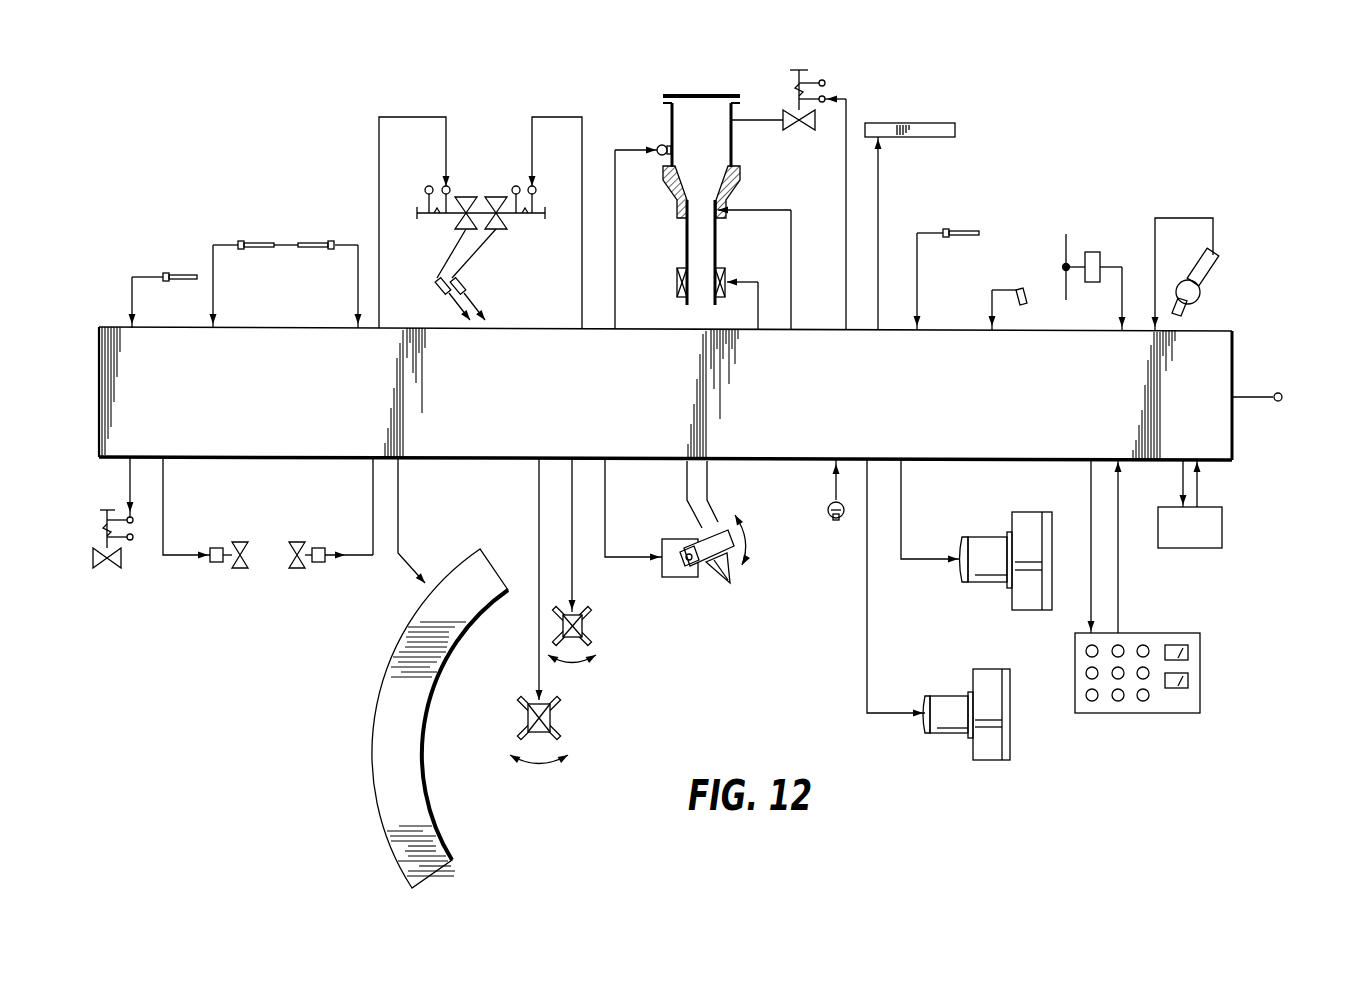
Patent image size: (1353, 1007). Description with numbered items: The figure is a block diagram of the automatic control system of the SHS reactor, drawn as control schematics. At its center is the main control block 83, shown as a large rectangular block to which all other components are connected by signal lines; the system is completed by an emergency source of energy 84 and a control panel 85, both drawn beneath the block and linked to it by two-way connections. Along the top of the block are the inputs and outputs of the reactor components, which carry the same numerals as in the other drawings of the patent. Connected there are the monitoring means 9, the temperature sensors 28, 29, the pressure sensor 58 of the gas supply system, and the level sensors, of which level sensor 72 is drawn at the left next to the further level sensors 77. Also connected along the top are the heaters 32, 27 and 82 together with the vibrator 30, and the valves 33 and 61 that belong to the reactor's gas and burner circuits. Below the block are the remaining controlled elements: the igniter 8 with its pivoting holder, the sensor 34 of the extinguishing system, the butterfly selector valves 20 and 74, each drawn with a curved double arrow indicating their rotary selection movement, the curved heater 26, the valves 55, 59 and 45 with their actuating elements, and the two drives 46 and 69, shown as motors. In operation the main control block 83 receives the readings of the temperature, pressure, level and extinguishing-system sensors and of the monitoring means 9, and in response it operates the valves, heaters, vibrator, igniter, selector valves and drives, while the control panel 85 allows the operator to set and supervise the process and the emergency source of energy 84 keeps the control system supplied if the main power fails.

The igniter 8 is at (710, 567).
The monitoring means 9 is at (1208, 278).
The butterfly selector valve 20 is at (560, 719).
The heater 26 is at (398, 715).
The heater 27 is at (675, 275).
The temperature sensor 28 is at (1026, 290).
The temperature sensor 29 is at (960, 230).
The vibrator 30 is at (660, 146).
The heater 32 is at (733, 193).
The valve 33 is at (799, 131).
The sensor of the extinguishing system 34 is at (829, 510).
The valve 45 is at (297, 570).
The drive 46 is at (1025, 521).
The valve 55 is at (105, 568).
The pressure sensor 58 is at (1100, 253).
The valve 59 is at (240, 570).
The valve 61 is at (496, 196).
The drive 69 is at (985, 680).
The level sensor 72 is at (188, 276).
The butterfly selector valve 74 is at (591, 622).
The sensors 77 is at (300, 243).
The heater 82 is at (930, 122).
The main control block 83 is at (1218, 347).
The emergency source of energy 84 is at (1222, 527).
The control panel 85 is at (1200, 650).